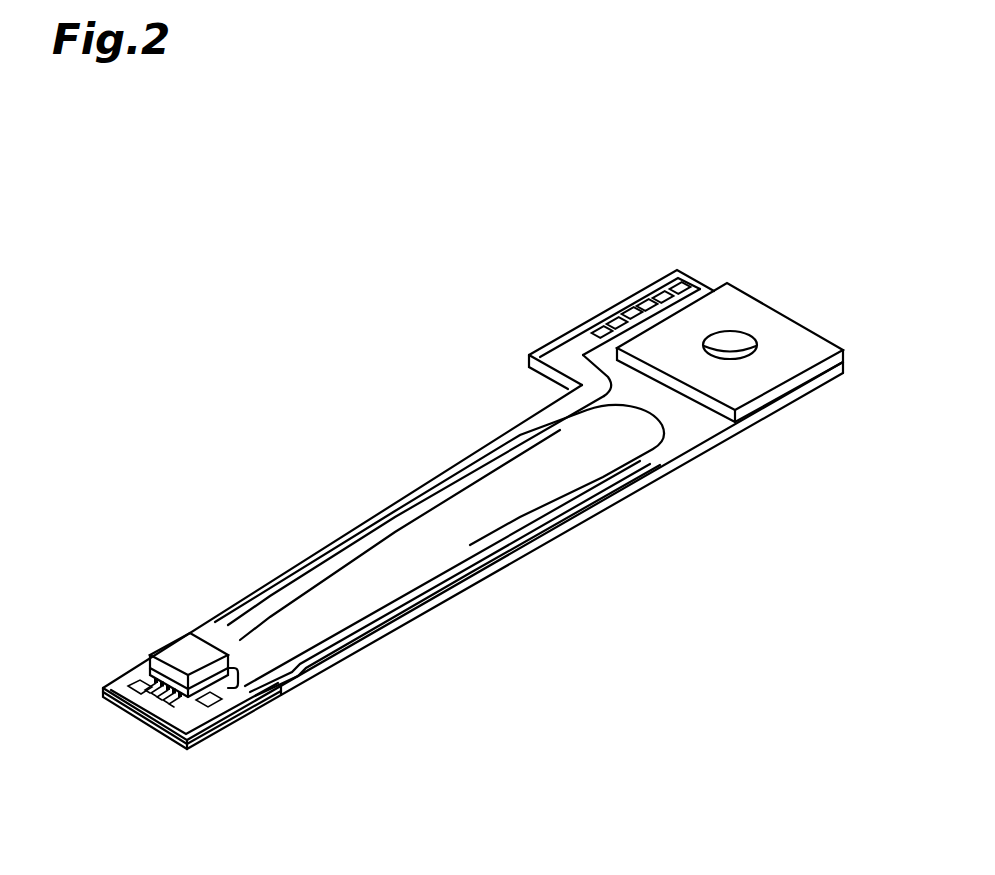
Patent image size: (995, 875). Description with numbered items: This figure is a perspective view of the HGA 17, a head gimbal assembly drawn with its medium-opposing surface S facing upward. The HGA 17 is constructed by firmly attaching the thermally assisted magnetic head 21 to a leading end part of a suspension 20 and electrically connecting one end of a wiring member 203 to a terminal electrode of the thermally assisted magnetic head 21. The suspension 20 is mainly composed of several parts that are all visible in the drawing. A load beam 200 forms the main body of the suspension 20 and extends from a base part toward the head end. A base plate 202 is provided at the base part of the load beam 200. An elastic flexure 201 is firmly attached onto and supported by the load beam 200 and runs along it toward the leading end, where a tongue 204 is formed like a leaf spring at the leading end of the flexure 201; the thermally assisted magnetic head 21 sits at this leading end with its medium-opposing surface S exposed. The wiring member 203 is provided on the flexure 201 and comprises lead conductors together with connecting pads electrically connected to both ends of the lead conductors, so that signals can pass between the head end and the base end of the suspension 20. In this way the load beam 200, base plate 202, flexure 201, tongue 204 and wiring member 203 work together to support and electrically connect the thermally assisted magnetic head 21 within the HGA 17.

The HGA 17 is at (562, 282).
The base plate 202 is at (803, 345).
The load beam 200 is at (694, 434).
The suspension 20 is at (466, 440).
The flexure 201 is at (538, 494).
The wiring member 203 is at (387, 597).
The thermally assisted magnetic head 21 is at (170, 638).
The medium-opposing surface S is at (183, 652).
The tongue 204 is at (211, 702).